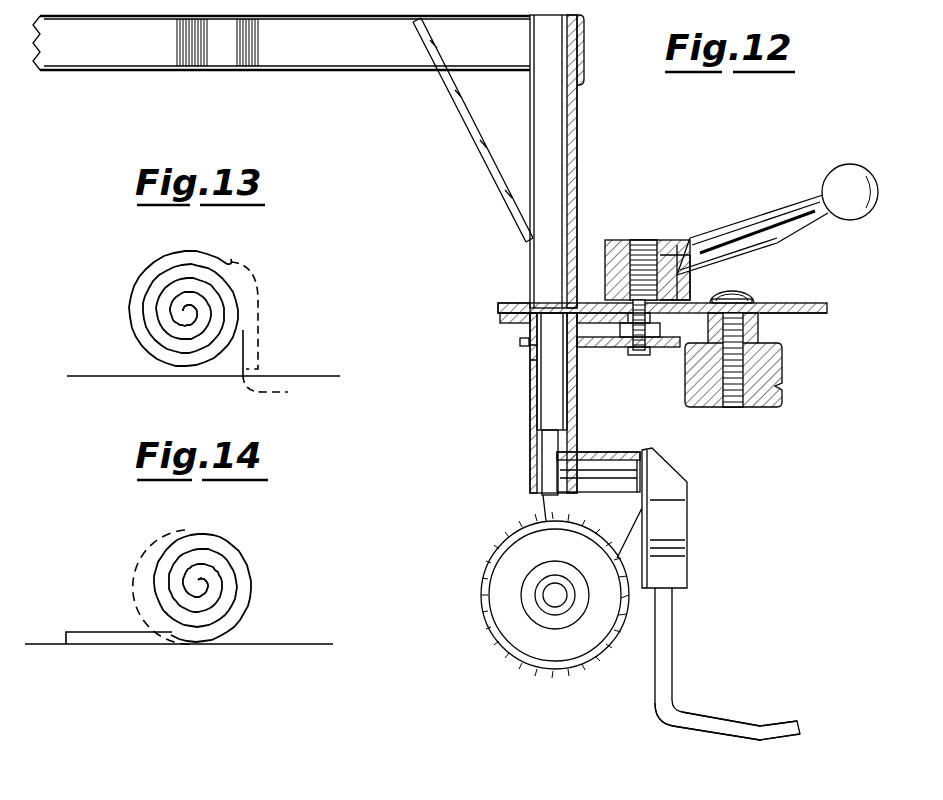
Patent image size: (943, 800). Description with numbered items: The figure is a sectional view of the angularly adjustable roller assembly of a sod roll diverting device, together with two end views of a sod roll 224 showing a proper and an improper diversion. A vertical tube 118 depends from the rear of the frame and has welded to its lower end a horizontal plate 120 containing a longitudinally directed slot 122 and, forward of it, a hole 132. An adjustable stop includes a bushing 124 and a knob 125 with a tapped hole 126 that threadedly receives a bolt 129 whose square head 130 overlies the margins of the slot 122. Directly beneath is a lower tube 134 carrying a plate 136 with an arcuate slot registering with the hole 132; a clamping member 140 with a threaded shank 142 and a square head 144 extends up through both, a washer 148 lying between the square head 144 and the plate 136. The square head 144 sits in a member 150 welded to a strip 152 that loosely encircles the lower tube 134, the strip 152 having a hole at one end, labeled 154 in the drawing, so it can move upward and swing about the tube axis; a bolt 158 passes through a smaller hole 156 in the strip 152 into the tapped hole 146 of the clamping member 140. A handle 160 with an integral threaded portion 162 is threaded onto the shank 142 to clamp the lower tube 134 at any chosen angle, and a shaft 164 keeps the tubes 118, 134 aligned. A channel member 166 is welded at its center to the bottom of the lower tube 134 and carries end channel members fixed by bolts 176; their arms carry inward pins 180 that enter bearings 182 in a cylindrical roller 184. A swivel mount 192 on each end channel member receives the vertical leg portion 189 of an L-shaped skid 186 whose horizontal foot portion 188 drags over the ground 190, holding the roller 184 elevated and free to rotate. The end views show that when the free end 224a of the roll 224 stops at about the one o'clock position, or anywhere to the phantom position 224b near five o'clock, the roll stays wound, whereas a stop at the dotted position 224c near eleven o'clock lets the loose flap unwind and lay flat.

In FIG. 12, the vertical tube 118 is at (580, 110).
In FIG. 12, the horizontal plate 120 is at (822, 305).
In FIG. 12, the longitudinally directed slot 122 is at (780, 328).
In FIG. 12, the bushing 124 is at (757, 332).
In FIG. 12, the knob 125 is at (782, 390).
In FIG. 12, the tapped hole 126 is at (735, 407).
In FIG. 12, the bolt 129 is at (743, 362).
In FIG. 12, the square head 130 is at (735, 292).
In FIG. 12, the hole 132 is at (613, 292).
In FIG. 12, the lower tube 134 is at (530, 378).
In FIG. 12, the plate 136 is at (500, 323).
In FIG. 12, the clamping member 140 is at (650, 348).
In FIG. 12, the threaded shank 142 is at (660, 265).
In FIG. 12, the square head 144 is at (638, 350).
In FIG. 12, the tapped hole 146 is at (650, 240).
In FIG. 12, the washer 148 is at (693, 302).
In FIG. 12, the member with square hole 150 is at (623, 340).
In FIG. 12, the strip 152 is at (520, 342).
In FIG. 12, the sleeve slot 154 is at (530, 352).
In FIG. 12, the smaller hole 156 is at (650, 358).
In FIG. 12, the bolt 158 is at (642, 372).
In FIG. 12, the handle 160 is at (768, 215).
In FIG. 12, the nut or threaded portion 162 is at (645, 240).
In FIG. 12, the shaft 164 is at (548, 405).
In FIG. 12, the channel member 166 is at (553, 468).
In FIG. 12, the bolts 176 is at (580, 493).
In FIG. 12, the pins 180 is at (542, 595).
In FIG. 12, the bearings 182 is at (538, 620).
In FIG. 12, the roller 184 is at (513, 653).
In FIG. 12, the L-shaped skid 186 is at (658, 714).
In FIG. 12, the horizontal foot portion 188 is at (712, 737).
In FIG. 12, the vertical leg portion 189 is at (675, 640).
In FIG. 13, the ground 190 is at (84, 375).
In FIG. 14, the ground 190 is at (312, 645).
In FIG. 12, the swivel mount 192 is at (690, 531).
In FIG. 13, the sod roll 224 is at (250, 272).
In FIG. 14, the sod roll 224 is at (257, 582).
In FIG. 13, the free end 224a is at (232, 260).
In FIG. 14, the free end 224a is at (55, 640).
In FIG. 13, the free end at five o'clock position 224b is at (290, 367).
In FIG. 14, the free end at eleven o'clock position 224c is at (180, 530).